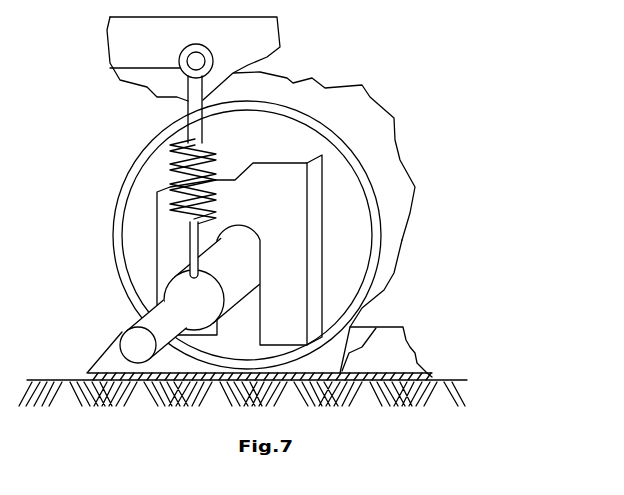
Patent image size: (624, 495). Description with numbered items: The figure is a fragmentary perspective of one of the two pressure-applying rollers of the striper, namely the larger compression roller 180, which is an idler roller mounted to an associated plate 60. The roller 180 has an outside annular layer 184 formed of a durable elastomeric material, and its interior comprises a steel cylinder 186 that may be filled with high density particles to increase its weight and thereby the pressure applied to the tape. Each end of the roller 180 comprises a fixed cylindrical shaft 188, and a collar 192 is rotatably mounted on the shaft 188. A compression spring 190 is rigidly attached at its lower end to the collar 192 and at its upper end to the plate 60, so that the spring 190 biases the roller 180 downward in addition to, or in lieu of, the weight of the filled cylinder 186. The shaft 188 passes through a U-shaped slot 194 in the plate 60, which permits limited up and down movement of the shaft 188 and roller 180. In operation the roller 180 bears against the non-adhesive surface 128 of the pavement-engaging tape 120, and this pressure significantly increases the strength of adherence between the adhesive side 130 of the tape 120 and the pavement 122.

The plate 60 is at (279, 212).
The pavement-engaging tape 120 is at (414, 349).
The pavement 122 is at (242, 426).
The non-adhesive surface 128 is at (410, 330).
The adhesive side 130 is at (247, 412).
The compression roller 180 is at (112, 186).
The outside annular layer 184 is at (331, 156).
The steel cylinder 186 is at (396, 280).
The fixed cylindrical shaft 188 is at (112, 336).
The compression spring 190 is at (138, 93).
The collar 192 is at (156, 284).
The U-shaped slot 194 is at (135, 187).